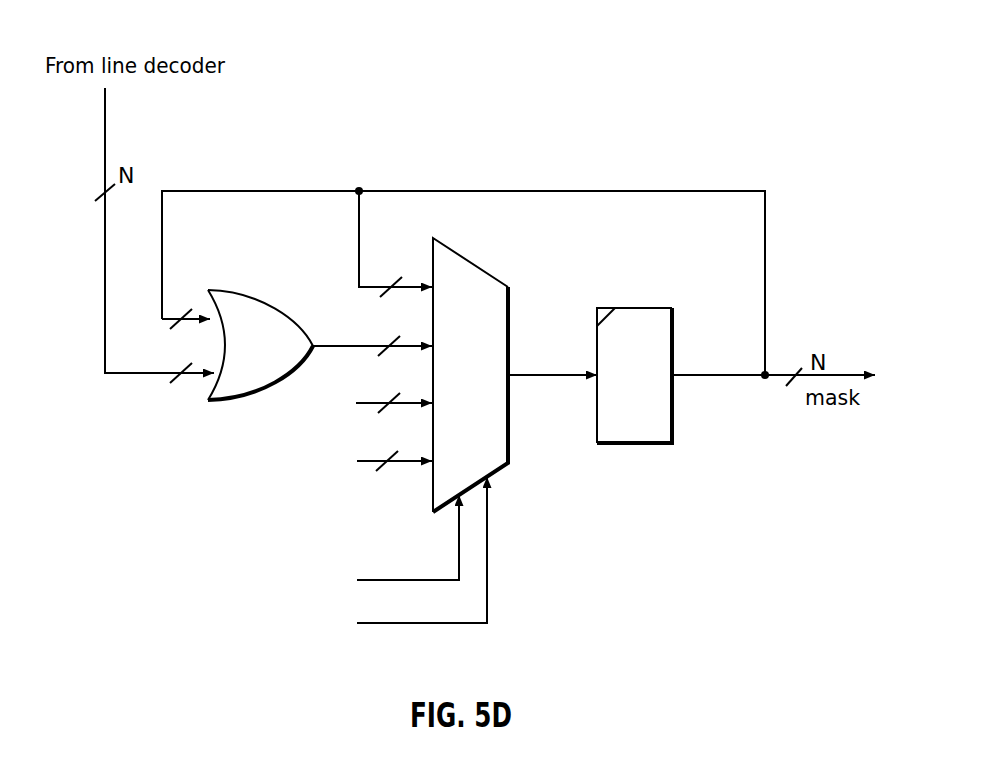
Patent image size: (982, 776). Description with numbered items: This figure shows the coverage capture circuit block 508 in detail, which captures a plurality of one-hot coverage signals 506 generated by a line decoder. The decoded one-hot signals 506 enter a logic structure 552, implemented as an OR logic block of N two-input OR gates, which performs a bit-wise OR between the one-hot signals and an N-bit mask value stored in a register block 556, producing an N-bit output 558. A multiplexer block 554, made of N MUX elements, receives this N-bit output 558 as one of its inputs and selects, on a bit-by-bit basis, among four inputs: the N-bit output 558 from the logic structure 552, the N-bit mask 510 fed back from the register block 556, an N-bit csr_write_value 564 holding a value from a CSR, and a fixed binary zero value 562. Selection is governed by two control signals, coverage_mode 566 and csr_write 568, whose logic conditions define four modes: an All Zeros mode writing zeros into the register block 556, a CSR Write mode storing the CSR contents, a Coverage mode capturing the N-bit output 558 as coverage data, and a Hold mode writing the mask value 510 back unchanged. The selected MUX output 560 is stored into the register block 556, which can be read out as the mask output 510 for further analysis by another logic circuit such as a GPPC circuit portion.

The one-hot signals 506 is at (105, 282).
The coverage capture circuit block 508 is at (697, 98).
The mask output 510 is at (695, 376).
The logic structure 552 is at (247, 297).
The multiplexer block 554 is at (472, 262).
The register block 556 is at (647, 308).
The N-bit output 558 is at (372, 350).
The MUX output 560 is at (520, 376).
The fixed binary 0 value 562 is at (370, 406).
The csr_write_value 564 is at (372, 466).
The coverage_mode signal 566 is at (415, 578).
The csr_write signal 568 is at (415, 627).